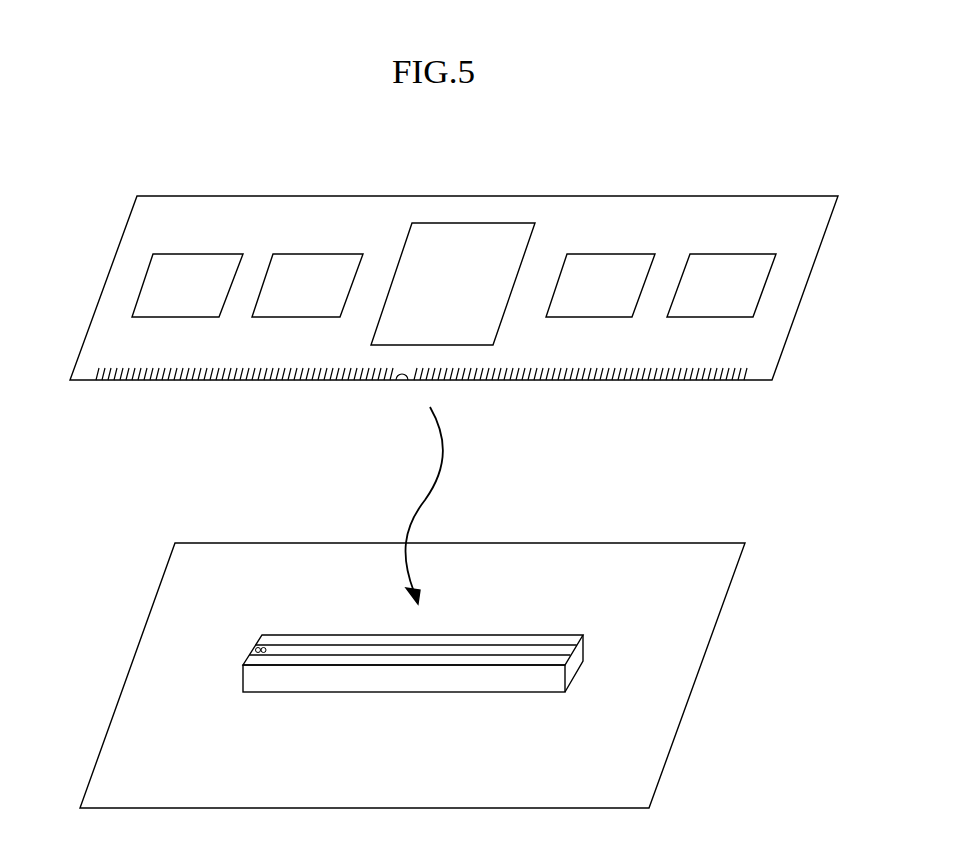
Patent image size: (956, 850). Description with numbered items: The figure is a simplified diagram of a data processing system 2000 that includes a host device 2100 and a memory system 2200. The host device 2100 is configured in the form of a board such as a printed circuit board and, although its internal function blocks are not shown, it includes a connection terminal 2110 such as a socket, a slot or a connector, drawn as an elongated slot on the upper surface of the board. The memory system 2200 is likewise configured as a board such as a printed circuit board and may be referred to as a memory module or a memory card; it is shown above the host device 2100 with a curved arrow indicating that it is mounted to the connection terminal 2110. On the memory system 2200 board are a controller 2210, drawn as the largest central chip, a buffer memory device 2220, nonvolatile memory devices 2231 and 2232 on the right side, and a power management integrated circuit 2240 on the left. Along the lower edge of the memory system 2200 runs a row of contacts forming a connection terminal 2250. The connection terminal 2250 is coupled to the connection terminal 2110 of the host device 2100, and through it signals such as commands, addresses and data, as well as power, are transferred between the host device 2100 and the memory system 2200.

The data processing system 2000 is at (112, 155).
The memory system 2200 is at (454, 314).
The controller 2210 is at (453, 284).
The buffer memory device 2220 is at (307, 285).
The power management integrated circuit 2240 is at (187, 285).
The nonvolatile memory device 2231 is at (600, 285).
The nonvolatile memory device 2232 is at (721, 285).
The connection terminal 2250 is at (117, 381).
The host device 2100 is at (412, 675).
The connection terminal 2110 is at (606, 628).